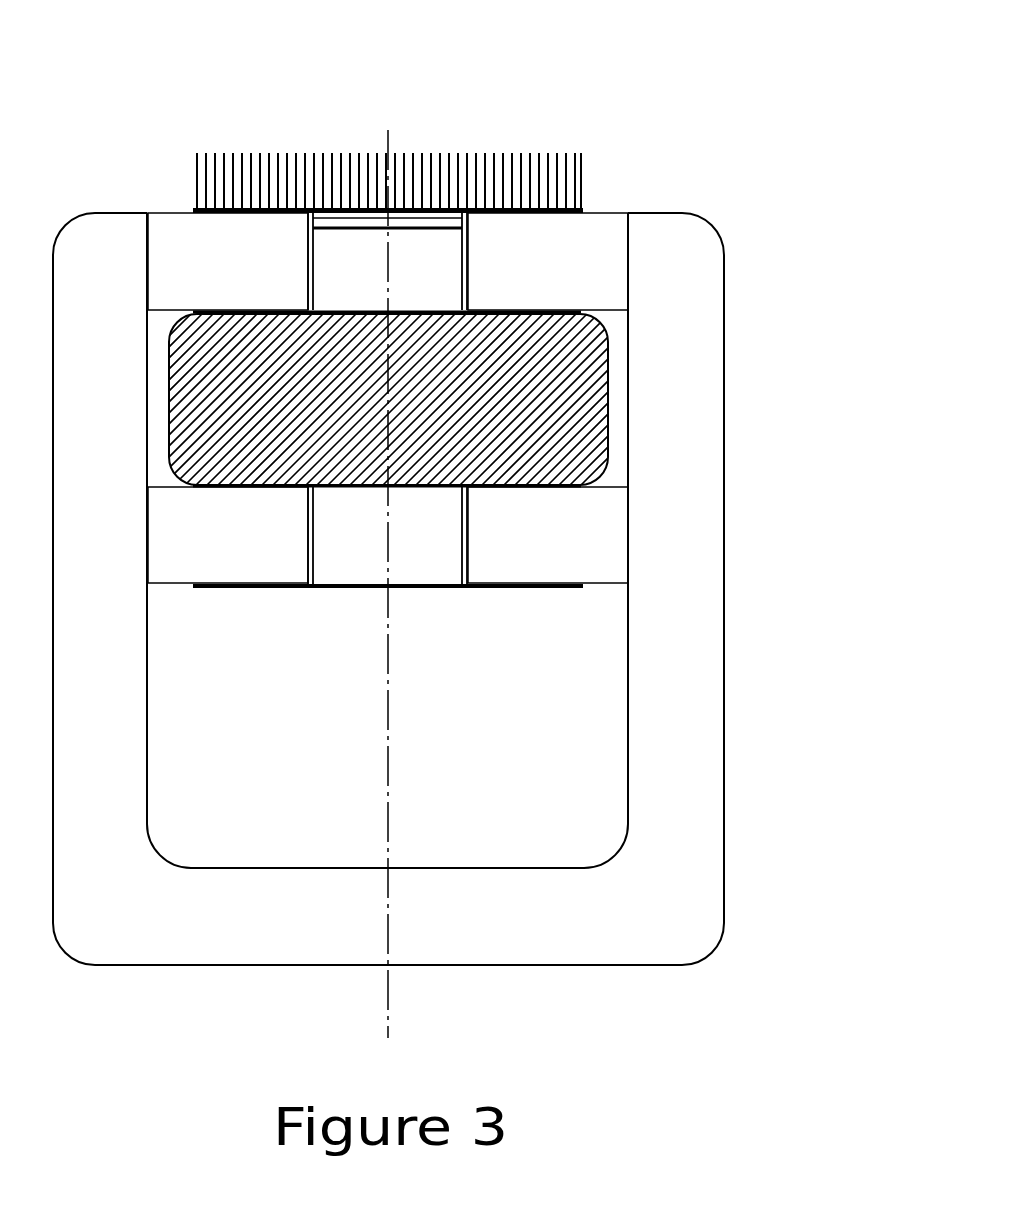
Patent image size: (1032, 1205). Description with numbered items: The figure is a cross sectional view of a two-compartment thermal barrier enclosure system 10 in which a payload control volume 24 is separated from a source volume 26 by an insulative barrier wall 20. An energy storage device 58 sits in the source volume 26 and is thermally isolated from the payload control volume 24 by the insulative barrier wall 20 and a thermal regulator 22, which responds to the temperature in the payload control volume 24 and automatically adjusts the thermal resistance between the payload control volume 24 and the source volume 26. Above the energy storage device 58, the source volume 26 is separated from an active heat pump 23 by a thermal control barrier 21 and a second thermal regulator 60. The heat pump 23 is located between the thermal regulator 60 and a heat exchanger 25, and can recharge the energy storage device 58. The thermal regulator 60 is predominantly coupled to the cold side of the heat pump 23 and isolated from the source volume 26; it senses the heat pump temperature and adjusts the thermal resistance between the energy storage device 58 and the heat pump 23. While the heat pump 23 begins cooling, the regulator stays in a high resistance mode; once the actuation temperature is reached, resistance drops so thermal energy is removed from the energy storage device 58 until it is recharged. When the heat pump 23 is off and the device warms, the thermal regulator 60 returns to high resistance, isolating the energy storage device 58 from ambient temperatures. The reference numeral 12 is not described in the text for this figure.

The thermal barrier enclosure system 10 is at (770, 788).
The housing 12 is at (460, 656).
The insulative barrier wall 20 is at (688, 468).
The thermal control barrier 21 is at (668, 234).
The thermal regulator 22 is at (499, 354).
The active heat pump 23 is at (421, 114).
The payload control volume 24 is at (503, 540).
The heat exchanger 25 is at (389, 115).
The source volume 26 is at (775, 518).
The energy storage device 58 is at (387, 306).
The thermal regulator 60 is at (461, 323).